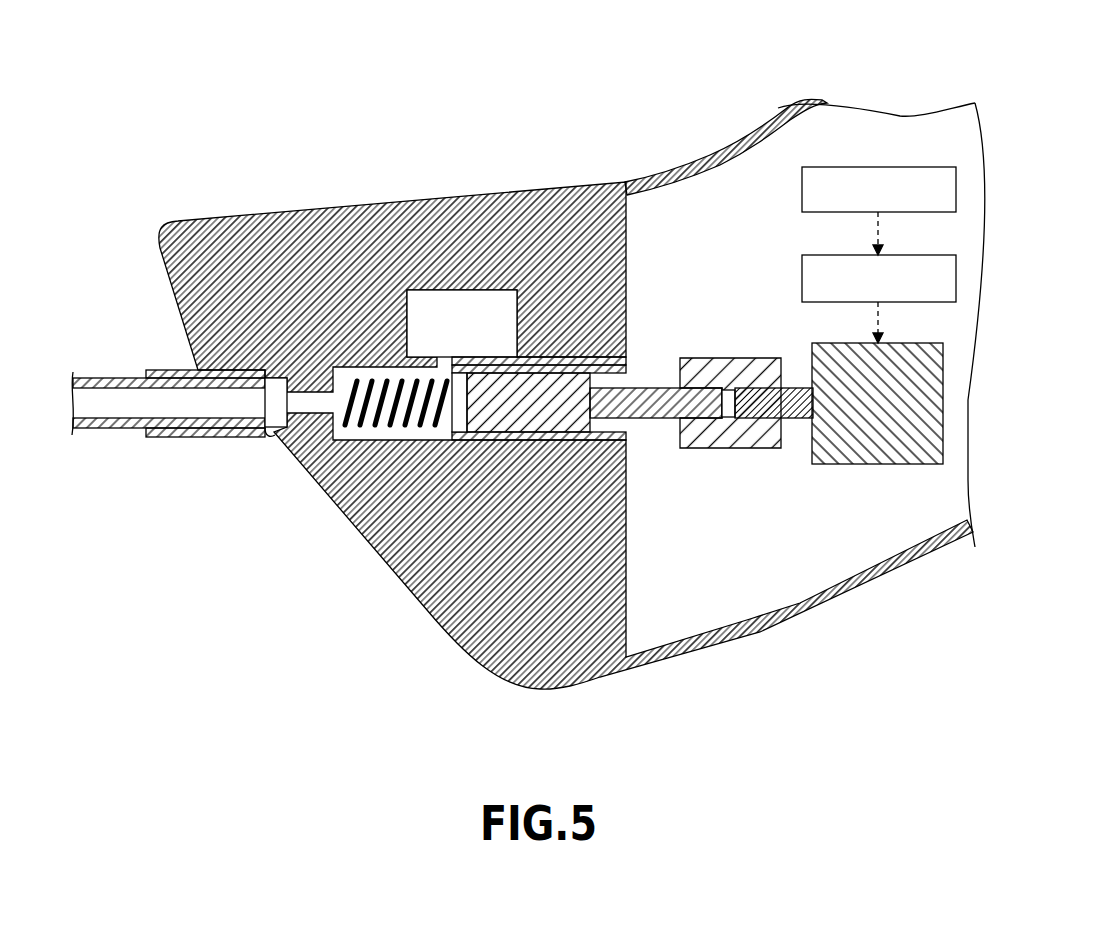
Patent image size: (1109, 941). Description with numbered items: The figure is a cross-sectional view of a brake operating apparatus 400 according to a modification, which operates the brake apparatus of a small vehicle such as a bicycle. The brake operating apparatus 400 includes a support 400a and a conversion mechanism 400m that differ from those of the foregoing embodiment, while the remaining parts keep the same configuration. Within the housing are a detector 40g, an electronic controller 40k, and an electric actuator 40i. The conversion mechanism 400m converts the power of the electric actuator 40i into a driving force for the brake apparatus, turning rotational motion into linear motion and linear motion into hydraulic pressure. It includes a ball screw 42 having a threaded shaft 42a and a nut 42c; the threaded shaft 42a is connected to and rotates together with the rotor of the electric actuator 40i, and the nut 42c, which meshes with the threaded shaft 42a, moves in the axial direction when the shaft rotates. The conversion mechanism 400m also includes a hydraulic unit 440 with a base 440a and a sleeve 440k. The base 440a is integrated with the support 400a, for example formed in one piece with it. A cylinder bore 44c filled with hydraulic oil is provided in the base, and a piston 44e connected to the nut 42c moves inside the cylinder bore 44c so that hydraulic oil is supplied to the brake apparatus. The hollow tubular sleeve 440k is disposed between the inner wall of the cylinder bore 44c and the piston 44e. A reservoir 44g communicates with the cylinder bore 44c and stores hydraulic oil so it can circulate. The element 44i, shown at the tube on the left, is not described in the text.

The brake operating apparatus 400 is at (711, 60).
The support 400a is at (545, 188).
The conversion mechanism 400m is at (744, 242).
The detector 40g is at (914, 167).
The electronic controller 40k is at (914, 255).
The electric actuator 40i is at (912, 343).
The ball screw 42 is at (748, 387).
The threaded shaft 42a is at (799, 410).
The nut 42c is at (735, 440).
The hydraulic unit 440 is at (645, 310).
The base 440a is at (612, 341).
The sleeve 440k is at (612, 429).
The reservoir 44g is at (443, 290).
The cylinder bore 44c is at (358, 443).
The piston 44e is at (561, 432).
The tube 44i is at (268, 437).